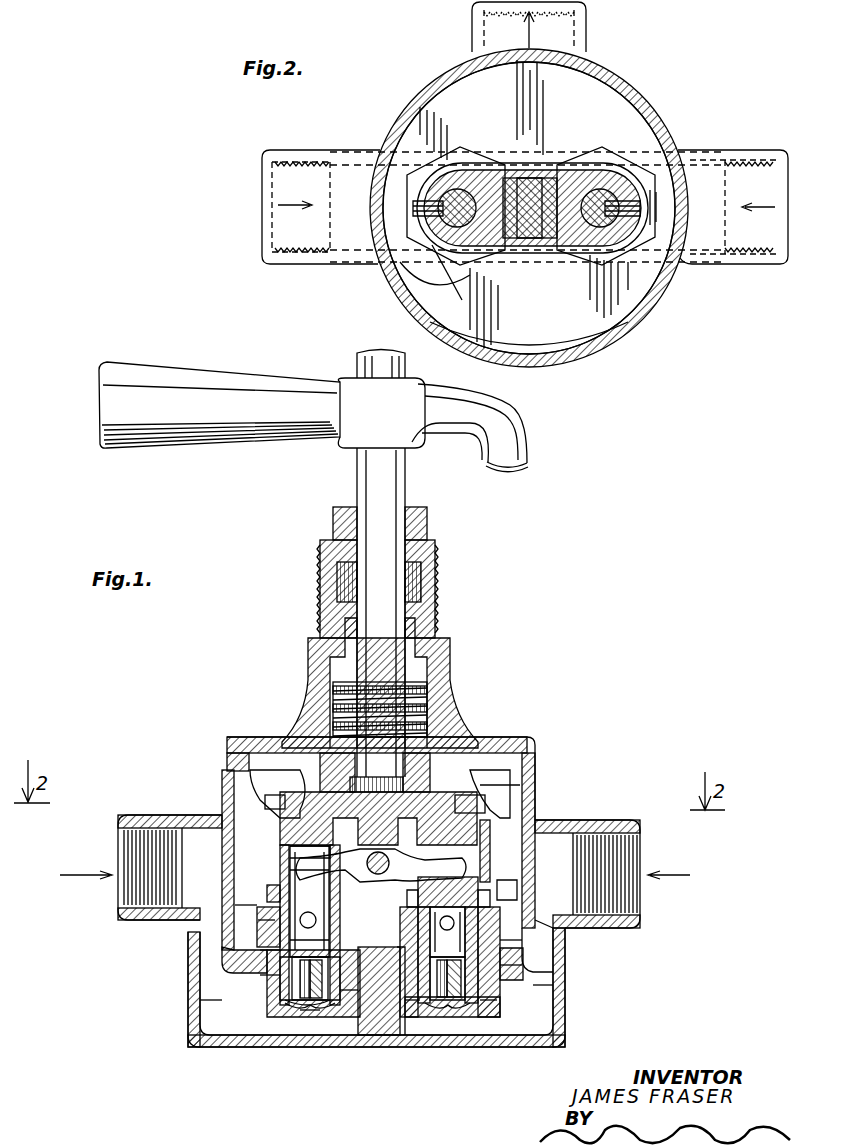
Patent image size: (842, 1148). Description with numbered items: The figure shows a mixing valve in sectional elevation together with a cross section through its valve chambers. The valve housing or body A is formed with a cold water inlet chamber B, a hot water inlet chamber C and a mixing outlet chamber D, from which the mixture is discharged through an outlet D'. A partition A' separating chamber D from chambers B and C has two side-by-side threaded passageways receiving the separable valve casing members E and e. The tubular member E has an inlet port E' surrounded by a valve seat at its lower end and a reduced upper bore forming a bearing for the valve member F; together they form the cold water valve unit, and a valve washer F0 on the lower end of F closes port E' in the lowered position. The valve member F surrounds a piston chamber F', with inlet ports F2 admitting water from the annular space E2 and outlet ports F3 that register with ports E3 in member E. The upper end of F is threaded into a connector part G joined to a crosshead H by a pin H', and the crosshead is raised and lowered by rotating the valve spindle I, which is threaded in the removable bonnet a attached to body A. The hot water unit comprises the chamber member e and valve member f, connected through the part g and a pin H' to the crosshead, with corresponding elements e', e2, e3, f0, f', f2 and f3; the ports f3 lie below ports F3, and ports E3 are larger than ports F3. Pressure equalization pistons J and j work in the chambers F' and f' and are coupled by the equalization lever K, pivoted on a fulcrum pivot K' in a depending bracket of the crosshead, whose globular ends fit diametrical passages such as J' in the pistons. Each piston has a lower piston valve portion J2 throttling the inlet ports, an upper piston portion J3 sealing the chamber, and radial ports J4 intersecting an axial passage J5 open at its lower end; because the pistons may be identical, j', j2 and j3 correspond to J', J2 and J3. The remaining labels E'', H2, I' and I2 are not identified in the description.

In FIG. 2, the valve housing or body A is at (529, 208).
In FIG. 1, the valve housing or body A is at (380, 890).
In FIG. 2, the partition A' is at (529, 353).
In FIG. 1, the partition A' is at (186, 1016).
In FIG. 2, the cold water inlet chamber B is at (698, 262).
In FIG. 1, the cold water inlet chamber B is at (545, 1027).
In FIG. 2, the hot water inlet chamber C is at (347, 262).
In FIG. 1, the hot water inlet chamber C is at (200, 1035).
In FIG. 2, the mixing outlet chamber D is at (529, 201).
In FIG. 1, the mixing outlet chamber D is at (221, 869).
In FIG. 2, the outlet D' is at (553, 27).
In FIG. 2, the valve casing member E is at (543, 234).
In FIG. 1, the inlet port E' is at (435, 1039).
In FIG. 1, the seat member part E'' is at (509, 1038).
In FIG. 1, the annular space E2 is at (395, 1036).
In FIG. 1, the ports in valve casing member E E3 is at (517, 890).
In FIG. 1, the valve member F is at (573, 900).
In FIG. 1, the piston chamber F' is at (375, 993).
In FIG. 1, the valve washer F0 is at (412, 1012).
In FIG. 1, the inlet ports F2 is at (553, 950).
In FIG. 1, the outlet ports F3 is at (535, 915).
In FIG. 2, the connector part G is at (605, 183).
In FIG. 1, the connector part G is at (430, 795).
In FIG. 2, the crosshead H is at (528, 162).
In FIG. 1, the crosshead H is at (375, 747).
In FIG. 2, the pin H' is at (531, 168).
In FIG. 1, the pin H' is at (366, 766).
In FIG. 1, the plug recess H2 is at (520, 790).
In FIG. 1, the valve spindle I is at (433, 564).
In FIG. 1, the packing nut I' is at (350, 601).
In FIG. 1, the handle I2 is at (237, 447).
In FIG. 1, the pressure equalization piston J is at (498, 899).
In FIG. 1, the diametrical passage J' is at (516, 897).
In FIG. 1, the lower piston valve portion J2 is at (522, 972).
In FIG. 1, the upper piston portion J3 is at (500, 900).
In FIG. 1, the radial ports J4 is at (522, 935).
In FIG. 1, the axial passage J5 is at (455, 1020).
In FIG. 2, the equalization lever K is at (523, 174).
In FIG. 1, the equalization lever K is at (283, 847).
In FIG. 2, the fulcrum pivot K' is at (529, 182).
In FIG. 1, the fulcrum pivot K' is at (381, 879).
In FIG. 1, the valve bonnet a is at (452, 648).
In FIG. 2, the valve chamber member e is at (413, 283).
In FIG. 1, the valve chamber member e is at (275, 1028).
In FIG. 1, the inlet port e' is at (336, 1051).
In FIG. 1, the annular space e2 is at (275, 1015).
In FIG. 1, the ports in chamber member e e3 is at (258, 908).
In FIG. 1, the valve member f is at (236, 907).
In FIG. 1, the piston chamber f' is at (216, 969).
In FIG. 1, the valve washer f0 is at (305, 1015).
In FIG. 1, the inlet ports f2 is at (275, 975).
In FIG. 1, the outlet ports f3 is at (270, 925).
In FIG. 2, the connector part g is at (457, 290).
In FIG. 1, the connector part g is at (300, 718).
In FIG. 1, the pressure equalization piston j is at (257, 896).
In FIG. 1, the liner seat j' is at (254, 926).
In FIG. 1, the liner base j2 is at (308, 1015).
In FIG. 1, the piston j3 is at (309, 901).